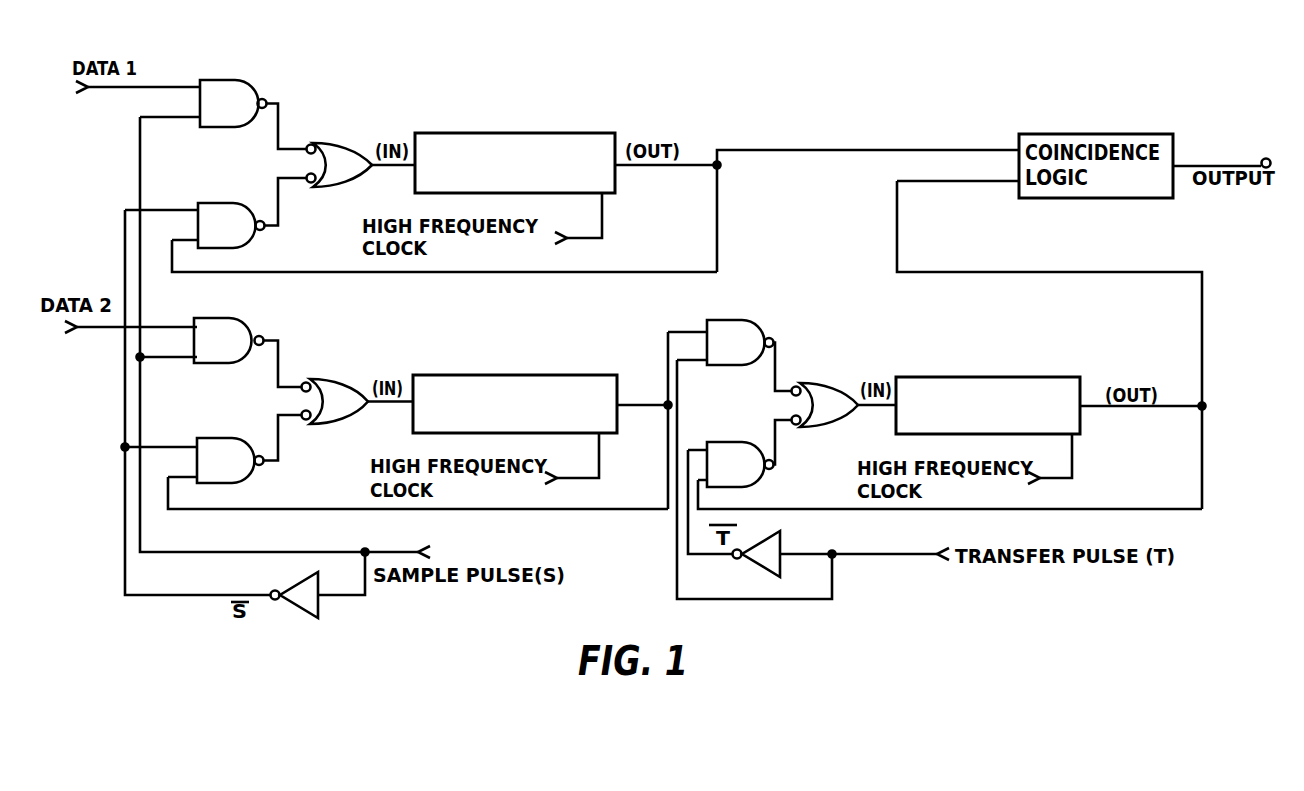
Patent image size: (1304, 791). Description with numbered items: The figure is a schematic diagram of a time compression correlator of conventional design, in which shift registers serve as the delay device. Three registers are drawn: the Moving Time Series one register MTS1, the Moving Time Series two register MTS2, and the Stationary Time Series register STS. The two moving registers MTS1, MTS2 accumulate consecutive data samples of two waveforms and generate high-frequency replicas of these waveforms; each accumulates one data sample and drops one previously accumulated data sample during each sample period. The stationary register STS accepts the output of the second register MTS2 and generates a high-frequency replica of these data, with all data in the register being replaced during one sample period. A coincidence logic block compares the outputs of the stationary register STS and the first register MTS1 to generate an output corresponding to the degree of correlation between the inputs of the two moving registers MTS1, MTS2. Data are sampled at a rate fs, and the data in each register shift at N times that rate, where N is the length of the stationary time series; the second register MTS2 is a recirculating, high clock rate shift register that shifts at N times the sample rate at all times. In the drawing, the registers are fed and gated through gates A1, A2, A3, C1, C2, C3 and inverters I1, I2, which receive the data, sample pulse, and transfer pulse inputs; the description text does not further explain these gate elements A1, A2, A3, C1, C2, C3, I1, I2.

The NAND gate A1 is at (230, 221).
The NAND gate A2 is at (230, 460).
The NAND/NOR gate A3 is at (285, 283).
The NAND gate C1 is at (740, 342).
The NAND gate C2 is at (740, 464).
The NOR gate C3 is at (825, 405).
The inverter I1 is at (295, 595).
The inverter I2 is at (757, 554).
The Moving Time Series 1 register MTS1 is at (515, 148).
The Moving Time Series 2 register MTS2 is at (515, 389).
The Stationary Time Series register STS is at (988, 391).